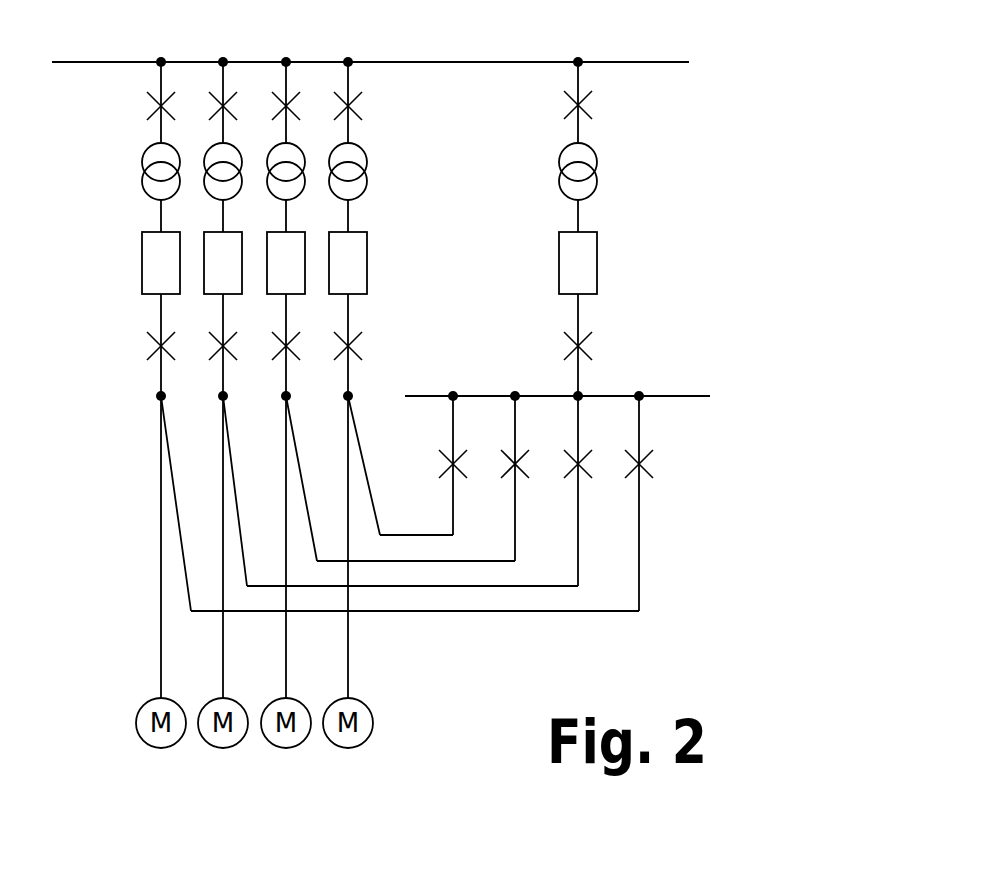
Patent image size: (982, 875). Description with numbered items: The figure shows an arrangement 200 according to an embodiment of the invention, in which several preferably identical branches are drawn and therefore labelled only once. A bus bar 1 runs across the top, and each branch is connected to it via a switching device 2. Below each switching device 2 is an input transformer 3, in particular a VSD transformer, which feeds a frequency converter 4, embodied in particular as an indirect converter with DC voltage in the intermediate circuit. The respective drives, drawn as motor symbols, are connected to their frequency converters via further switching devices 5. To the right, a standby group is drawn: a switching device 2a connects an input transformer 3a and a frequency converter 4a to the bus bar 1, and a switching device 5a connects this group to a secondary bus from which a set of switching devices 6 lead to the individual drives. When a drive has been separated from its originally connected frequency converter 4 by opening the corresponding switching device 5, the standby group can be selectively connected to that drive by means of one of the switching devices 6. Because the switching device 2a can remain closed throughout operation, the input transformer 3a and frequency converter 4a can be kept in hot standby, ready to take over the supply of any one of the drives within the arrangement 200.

The bus bar 1 is at (102, 62).
The switching device 2 is at (214, 114).
The switching device 2a is at (535, 112).
The input transformer 3 is at (216, 172).
The input transformer 3a is at (537, 171).
The frequency converter 4 is at (216, 263).
The frequency converter 4a is at (537, 263).
The switching device 5 is at (214, 354).
The switching device 5a is at (535, 353).
The switching device 6 is at (679, 469).
The arrangement 200 is at (757, 130).